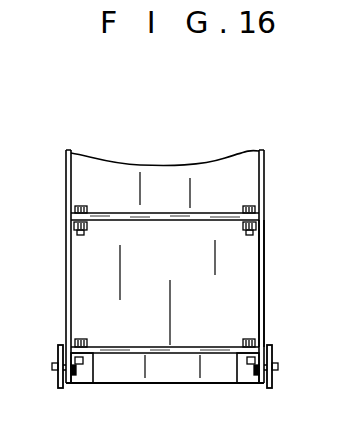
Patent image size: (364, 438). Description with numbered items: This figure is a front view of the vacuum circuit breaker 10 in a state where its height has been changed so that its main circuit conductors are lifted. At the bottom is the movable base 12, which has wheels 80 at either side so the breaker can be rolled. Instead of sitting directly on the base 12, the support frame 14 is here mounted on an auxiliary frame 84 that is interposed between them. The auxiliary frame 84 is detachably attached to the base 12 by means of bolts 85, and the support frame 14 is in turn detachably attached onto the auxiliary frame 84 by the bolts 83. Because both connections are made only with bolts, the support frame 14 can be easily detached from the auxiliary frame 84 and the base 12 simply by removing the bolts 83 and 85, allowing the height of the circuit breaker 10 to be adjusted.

The vacuum circuit breaker 10 is at (164, 148).
The support frame 14 is at (265, 161).
The auxiliary frame 84 is at (265, 278).
The bolts 83 is at (80, 206).
The bolts 85 is at (80, 346).
The wheels 80 is at (56, 384).
The movable base 12 is at (93, 370).